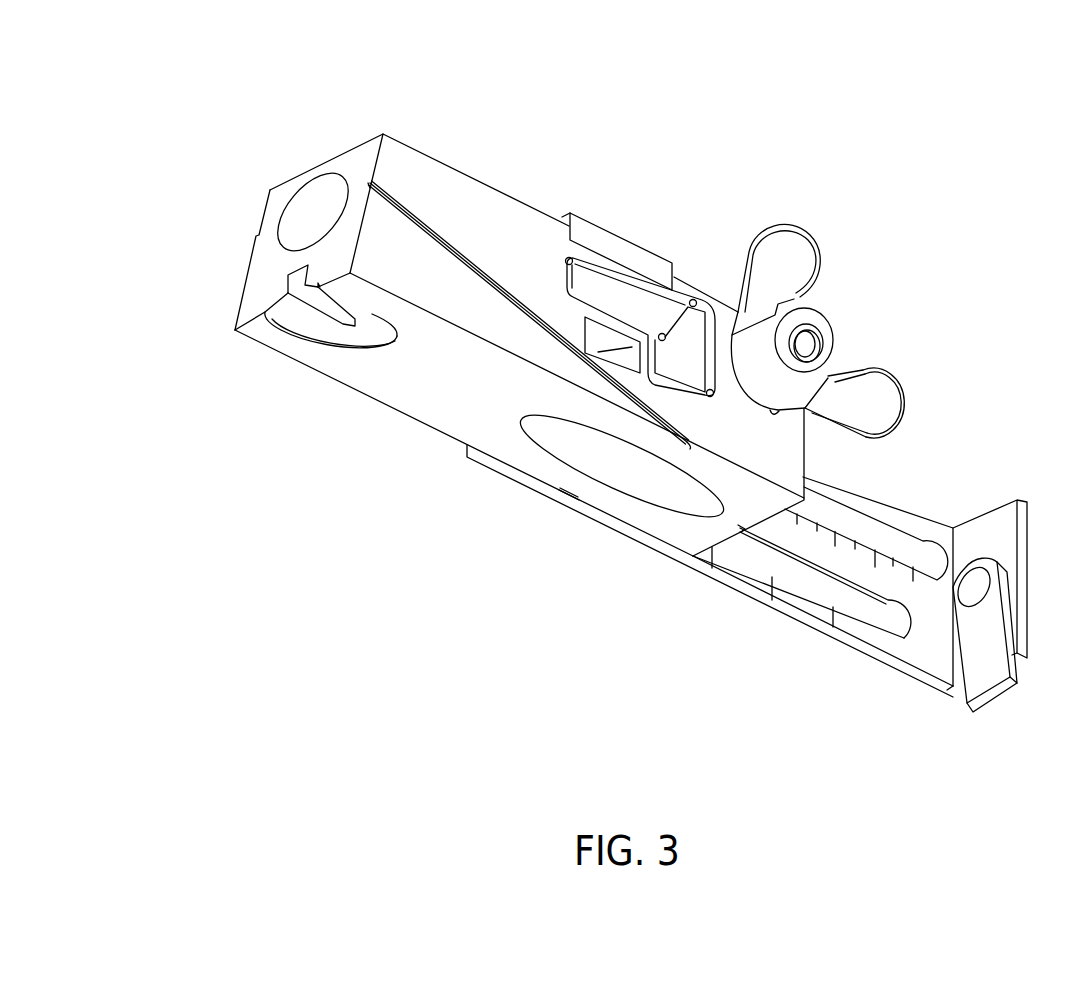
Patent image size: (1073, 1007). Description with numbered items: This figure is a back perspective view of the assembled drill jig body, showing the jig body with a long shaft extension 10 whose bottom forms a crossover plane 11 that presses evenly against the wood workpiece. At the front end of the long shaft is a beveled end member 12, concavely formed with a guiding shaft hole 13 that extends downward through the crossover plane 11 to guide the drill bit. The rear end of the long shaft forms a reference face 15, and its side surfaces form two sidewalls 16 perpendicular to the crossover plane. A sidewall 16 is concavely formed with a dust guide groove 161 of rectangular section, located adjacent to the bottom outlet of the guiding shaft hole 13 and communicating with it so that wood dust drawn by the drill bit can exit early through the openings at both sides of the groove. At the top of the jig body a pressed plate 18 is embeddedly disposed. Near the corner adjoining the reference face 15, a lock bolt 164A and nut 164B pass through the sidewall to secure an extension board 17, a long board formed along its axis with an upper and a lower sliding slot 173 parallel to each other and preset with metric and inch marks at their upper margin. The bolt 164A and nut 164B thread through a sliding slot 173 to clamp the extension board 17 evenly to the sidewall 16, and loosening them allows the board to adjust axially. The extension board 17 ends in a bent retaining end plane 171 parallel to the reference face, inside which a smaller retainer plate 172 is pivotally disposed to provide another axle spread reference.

The jig body with a long shaft extension 10 is at (353, 125).
The crossover plane 11 is at (422, 383).
The beveled end member 12 is at (257, 282).
The guiding shaft hole 13 is at (317, 193).
The reference face 15 is at (738, 527).
The sidewall 16 is at (458, 215).
The extension board 17 is at (803, 625).
The pressed plate 18 is at (582, 228).
The dust guide groove 161 is at (602, 337).
The lock bolt 164A is at (822, 326).
The nut 164B is at (779, 262).
The retaining end plane 171 is at (1002, 527).
The retainer plate 172 is at (983, 663).
The sliding slot 173 is at (870, 535).